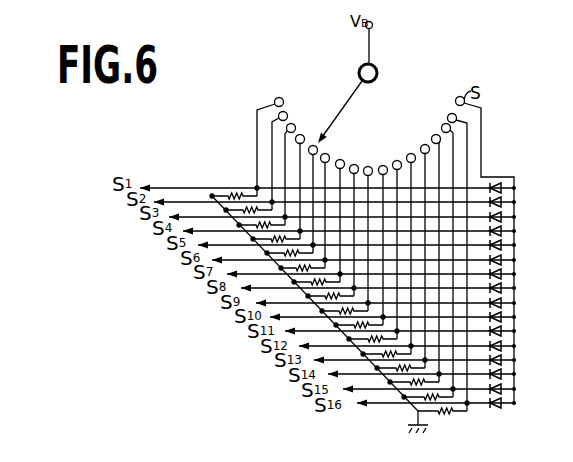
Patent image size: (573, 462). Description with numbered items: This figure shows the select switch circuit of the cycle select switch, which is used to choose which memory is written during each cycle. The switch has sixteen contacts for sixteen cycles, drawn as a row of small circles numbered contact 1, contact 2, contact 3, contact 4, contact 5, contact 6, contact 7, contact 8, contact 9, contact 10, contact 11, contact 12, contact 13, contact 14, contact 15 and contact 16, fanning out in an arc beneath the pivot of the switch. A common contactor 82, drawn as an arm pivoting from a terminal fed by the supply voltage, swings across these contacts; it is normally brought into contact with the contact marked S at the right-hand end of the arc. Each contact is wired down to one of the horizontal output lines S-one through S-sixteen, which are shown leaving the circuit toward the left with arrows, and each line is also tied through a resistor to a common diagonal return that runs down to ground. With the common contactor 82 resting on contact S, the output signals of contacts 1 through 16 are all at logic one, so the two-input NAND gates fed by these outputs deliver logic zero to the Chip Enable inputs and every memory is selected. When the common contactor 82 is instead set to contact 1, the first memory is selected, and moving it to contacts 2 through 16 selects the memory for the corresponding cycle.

The common contactor 82 is at (340, 112).
The contact 1 is at (251, 144).
The contact 2 is at (260, 159).
The contact 3 is at (271, 172).
The contact 4 is at (283, 185).
The contact 5 is at (296, 196).
The contact 6 is at (306, 206).
The contact 7 is at (318, 216).
The contact 8 is at (332, 225).
The contact 9 is at (346, 232).
The contact 10 is at (362, 239).
The contact 11 is at (376, 244).
The contact 12 is at (389, 249).
The contact 13 is at (402, 251).
The contact 14 is at (414, 253).
The contact 15 is at (428, 256).
The contact 16 is at (443, 256).